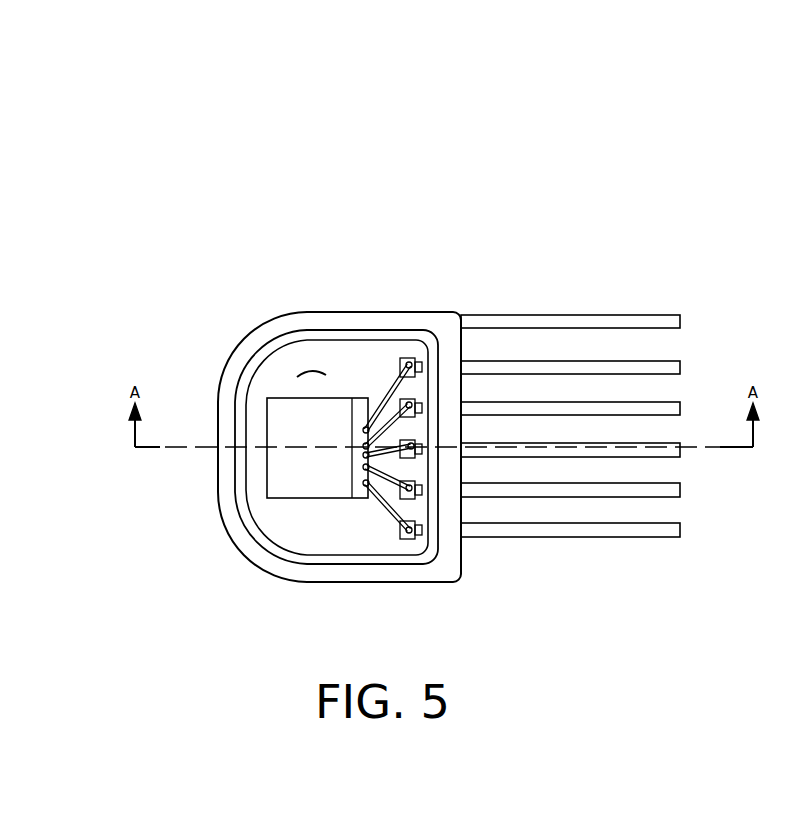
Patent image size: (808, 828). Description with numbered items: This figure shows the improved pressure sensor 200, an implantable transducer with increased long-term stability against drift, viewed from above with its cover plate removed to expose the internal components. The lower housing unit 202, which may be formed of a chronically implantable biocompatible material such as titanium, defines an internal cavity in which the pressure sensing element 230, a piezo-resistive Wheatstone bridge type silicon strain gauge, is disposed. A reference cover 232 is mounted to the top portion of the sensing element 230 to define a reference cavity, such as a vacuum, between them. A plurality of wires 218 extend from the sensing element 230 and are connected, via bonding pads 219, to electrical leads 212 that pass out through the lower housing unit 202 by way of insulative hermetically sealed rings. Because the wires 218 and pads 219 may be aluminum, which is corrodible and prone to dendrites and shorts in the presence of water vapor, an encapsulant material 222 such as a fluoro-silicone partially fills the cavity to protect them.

The pressure sensor 200 is at (297, 149).
The lower housing unit 202 is at (407, 320).
The electrical leads 212 is at (682, 302).
The wires 218 is at (376, 375).
The bonding pads 219 is at (410, 540).
The encapsulant material 222 is at (308, 372).
The pressure sensing element 230 is at (362, 492).
The reference cover 232 is at (243, 552).